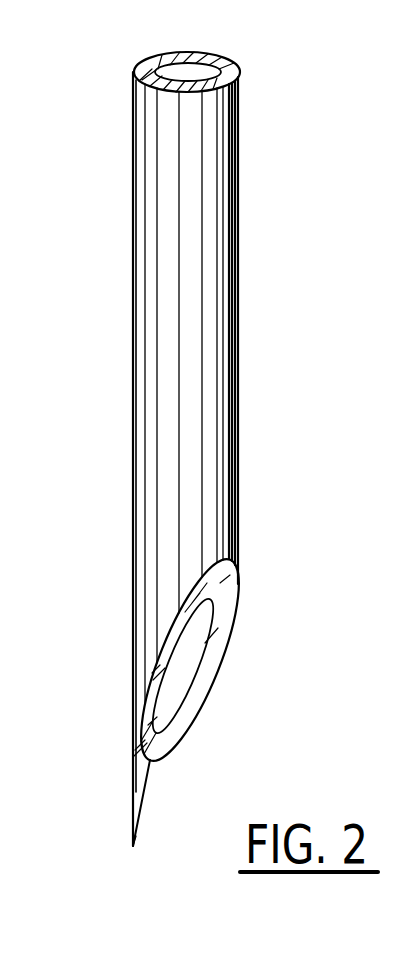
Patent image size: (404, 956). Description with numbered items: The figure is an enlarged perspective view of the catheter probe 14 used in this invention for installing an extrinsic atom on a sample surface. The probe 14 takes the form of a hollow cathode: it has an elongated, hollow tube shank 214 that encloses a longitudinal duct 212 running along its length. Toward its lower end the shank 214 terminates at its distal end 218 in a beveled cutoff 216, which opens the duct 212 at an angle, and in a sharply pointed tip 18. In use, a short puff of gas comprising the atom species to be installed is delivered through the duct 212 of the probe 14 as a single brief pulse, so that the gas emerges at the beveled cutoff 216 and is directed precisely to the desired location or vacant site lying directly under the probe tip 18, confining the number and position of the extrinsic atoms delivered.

The probe 14 is at (182, 441).
The longitudinal duct 212 is at (189, 55).
The hollow tube shank 214 is at (133, 173).
The beveled cutoff 216 is at (219, 660).
The distal end 218 is at (134, 690).
The probe tip 18 is at (136, 840).